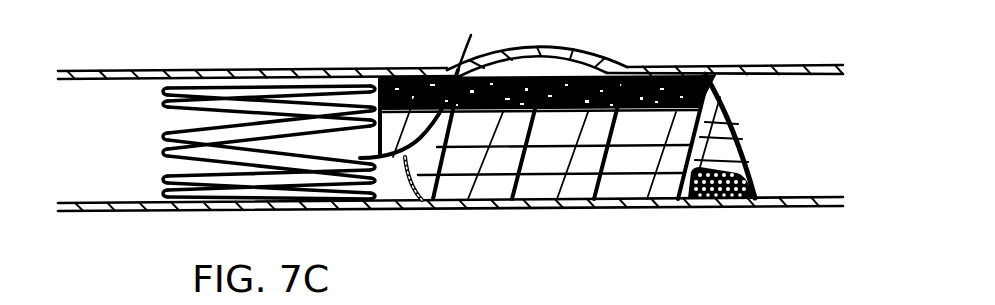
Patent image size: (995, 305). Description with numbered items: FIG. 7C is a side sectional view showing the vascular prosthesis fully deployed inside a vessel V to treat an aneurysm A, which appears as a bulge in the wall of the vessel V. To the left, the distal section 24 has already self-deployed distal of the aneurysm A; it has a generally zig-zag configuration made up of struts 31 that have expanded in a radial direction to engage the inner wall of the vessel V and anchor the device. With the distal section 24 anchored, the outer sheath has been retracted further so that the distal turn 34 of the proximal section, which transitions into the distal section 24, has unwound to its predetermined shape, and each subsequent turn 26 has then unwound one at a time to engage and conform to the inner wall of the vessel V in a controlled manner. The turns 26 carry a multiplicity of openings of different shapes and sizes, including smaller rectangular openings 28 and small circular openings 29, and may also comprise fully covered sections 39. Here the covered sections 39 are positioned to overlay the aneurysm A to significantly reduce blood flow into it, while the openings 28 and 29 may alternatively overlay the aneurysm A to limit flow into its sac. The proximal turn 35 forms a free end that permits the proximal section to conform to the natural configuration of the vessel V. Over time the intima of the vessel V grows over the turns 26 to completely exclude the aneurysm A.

The distal section 24 is at (263, 113).
The struts 31 is at (186, 88).
The distal turn 34 is at (421, 82).
The covered sections 39 is at (512, 78).
The aneurysm A is at (572, 52).
The vessel V is at (692, 66).
The smaller rectangular openings 28 is at (727, 125).
The turns 26 is at (603, 198).
The proximal turn 35 is at (755, 183).
The small circular openings 29 is at (717, 197).